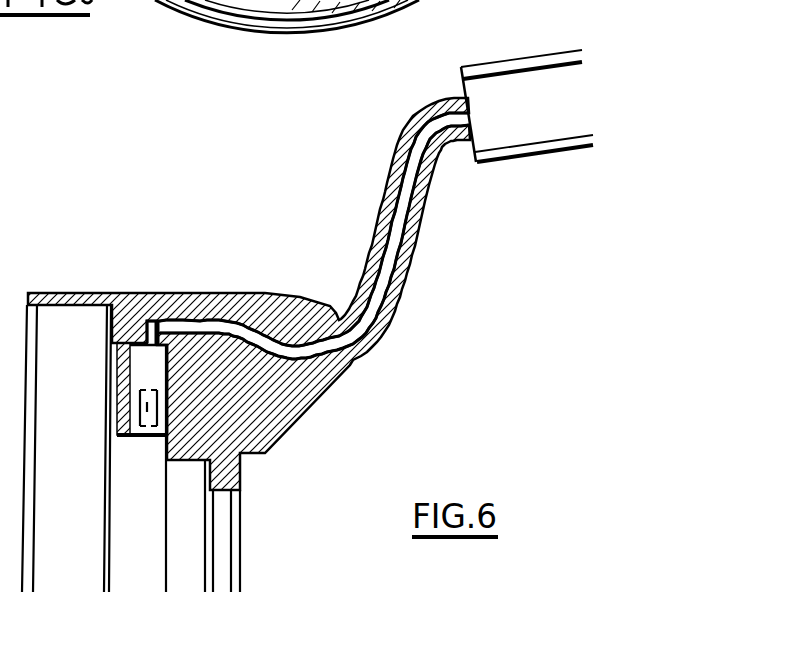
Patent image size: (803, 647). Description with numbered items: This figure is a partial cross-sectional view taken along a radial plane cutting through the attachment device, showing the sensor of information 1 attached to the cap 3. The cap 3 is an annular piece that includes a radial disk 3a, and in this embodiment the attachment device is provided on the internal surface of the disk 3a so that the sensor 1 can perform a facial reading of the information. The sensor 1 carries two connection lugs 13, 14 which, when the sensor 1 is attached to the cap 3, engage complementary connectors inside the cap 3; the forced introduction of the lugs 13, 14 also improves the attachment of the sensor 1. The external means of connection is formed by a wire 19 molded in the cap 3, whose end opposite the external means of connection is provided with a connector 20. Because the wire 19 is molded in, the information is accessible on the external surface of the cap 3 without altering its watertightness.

In FIG. 6, the sensor of information 1 is at (143, 420).
In FIG. 6, the cap 3 is at (272, 303).
In FIG. 5, the radial disk 3a is at (187, 0).
In FIG. 6, the lug 13 is at (249, 294).
In FIG. 6, the lug 14 is at (249, 294).
In FIG. 6, the wire 19 is at (417, 160).
In FIG. 6, the connector 20 is at (533, 80).